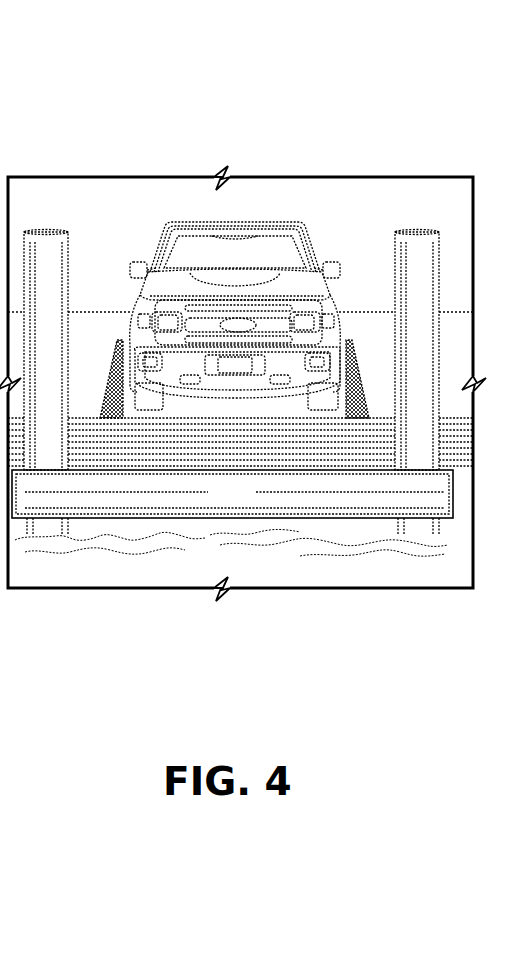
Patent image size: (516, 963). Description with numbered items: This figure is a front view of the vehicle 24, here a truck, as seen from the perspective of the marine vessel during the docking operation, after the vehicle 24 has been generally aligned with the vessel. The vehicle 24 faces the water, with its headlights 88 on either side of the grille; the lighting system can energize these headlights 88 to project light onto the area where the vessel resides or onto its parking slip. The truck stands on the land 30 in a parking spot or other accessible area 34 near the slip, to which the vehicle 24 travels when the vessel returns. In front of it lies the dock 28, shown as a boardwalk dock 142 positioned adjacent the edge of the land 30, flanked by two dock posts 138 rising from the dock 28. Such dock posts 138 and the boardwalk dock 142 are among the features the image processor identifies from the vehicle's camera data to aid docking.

The vehicle 24 is at (243, 352).
The dock 28 is at (238, 443).
The land 30 is at (76, 357).
The accessible area 34 is at (289, 402).
The headlights 88 is at (126, 322).
The dock posts 138 is at (42, 232).
The boardwalk dock 142 is at (456, 442).